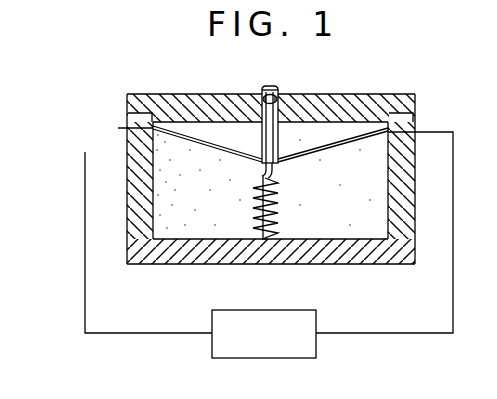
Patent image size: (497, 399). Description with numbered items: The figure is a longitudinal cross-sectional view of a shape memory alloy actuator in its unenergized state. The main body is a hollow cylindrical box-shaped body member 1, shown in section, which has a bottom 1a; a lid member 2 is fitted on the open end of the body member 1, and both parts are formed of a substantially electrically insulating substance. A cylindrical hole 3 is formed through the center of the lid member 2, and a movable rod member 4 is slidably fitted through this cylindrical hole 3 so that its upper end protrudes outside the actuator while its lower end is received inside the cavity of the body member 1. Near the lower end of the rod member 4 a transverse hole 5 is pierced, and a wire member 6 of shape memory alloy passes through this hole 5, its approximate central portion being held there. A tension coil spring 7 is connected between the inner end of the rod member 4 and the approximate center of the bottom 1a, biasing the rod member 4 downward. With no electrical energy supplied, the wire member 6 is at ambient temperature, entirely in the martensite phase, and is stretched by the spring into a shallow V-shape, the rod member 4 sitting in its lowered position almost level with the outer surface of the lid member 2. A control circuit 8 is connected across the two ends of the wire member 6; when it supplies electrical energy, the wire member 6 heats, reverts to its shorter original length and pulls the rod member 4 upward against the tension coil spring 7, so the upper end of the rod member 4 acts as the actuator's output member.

The body member 1 is at (127, 218).
The bottom 1a is at (330, 240).
The lid member 2 is at (176, 94).
The cylindrical hole 3 is at (278, 97).
The movable rod member 4 is at (263, 90).
The transverse hole 5 is at (278, 166).
The wire member 6 is at (180, 138).
The tension coil spring 7 is at (253, 211).
The control circuit 8 is at (318, 319).